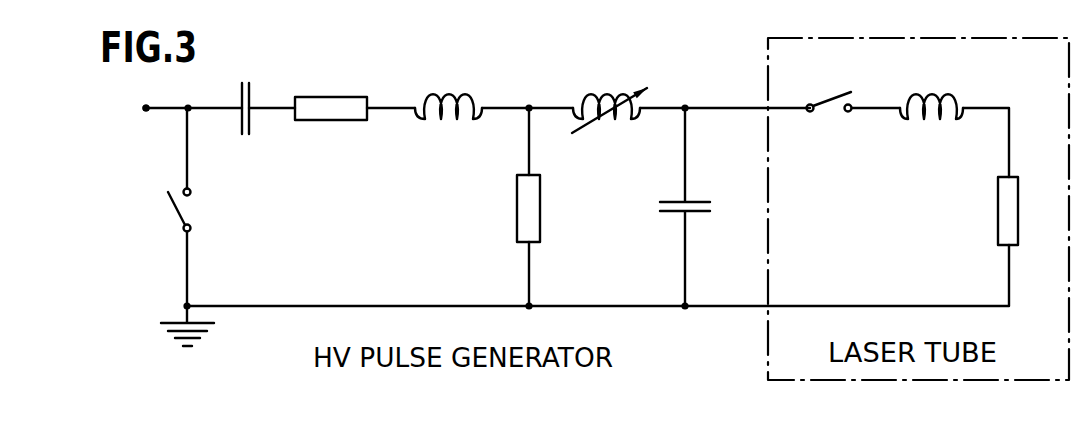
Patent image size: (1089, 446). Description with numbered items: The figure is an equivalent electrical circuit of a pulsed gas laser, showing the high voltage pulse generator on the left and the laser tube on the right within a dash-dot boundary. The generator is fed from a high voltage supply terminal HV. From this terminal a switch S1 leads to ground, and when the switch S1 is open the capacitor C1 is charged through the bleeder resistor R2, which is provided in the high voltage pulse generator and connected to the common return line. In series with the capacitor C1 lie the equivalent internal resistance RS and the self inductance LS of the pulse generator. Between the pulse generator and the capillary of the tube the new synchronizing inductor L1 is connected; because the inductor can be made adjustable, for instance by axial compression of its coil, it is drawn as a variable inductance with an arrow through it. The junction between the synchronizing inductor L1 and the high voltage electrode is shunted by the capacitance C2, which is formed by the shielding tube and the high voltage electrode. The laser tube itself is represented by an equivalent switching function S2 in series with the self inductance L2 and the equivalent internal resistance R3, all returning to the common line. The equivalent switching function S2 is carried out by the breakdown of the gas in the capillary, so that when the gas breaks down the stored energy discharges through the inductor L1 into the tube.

The high voltage supply terminal HV is at (124, 108).
The switch S1 is at (196, 207).
The capacitor C1 is at (250, 92).
The equivalent internal resistance RS is at (331, 84).
The self inductance LS is at (448, 85).
The synchronizing inductor L1 is at (609, 92).
The bleeder resistor R2 is at (547, 207).
The capacitance C2 is at (703, 207).
The equivalent switching function S2 is at (829, 82).
The self inductance L2 is at (931, 85).
The equivalent internal resistance R3 is at (1026, 211).